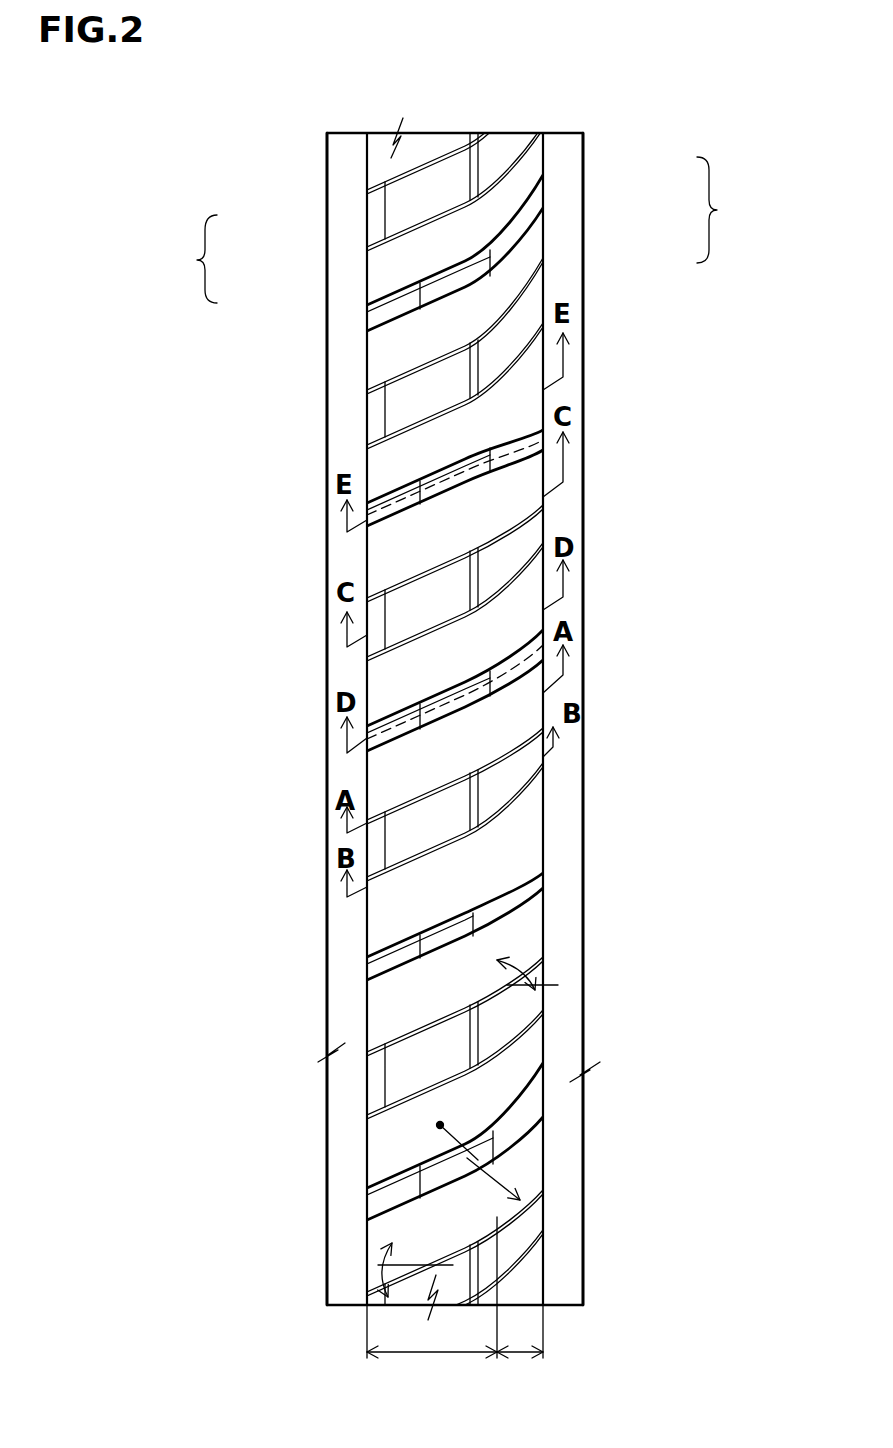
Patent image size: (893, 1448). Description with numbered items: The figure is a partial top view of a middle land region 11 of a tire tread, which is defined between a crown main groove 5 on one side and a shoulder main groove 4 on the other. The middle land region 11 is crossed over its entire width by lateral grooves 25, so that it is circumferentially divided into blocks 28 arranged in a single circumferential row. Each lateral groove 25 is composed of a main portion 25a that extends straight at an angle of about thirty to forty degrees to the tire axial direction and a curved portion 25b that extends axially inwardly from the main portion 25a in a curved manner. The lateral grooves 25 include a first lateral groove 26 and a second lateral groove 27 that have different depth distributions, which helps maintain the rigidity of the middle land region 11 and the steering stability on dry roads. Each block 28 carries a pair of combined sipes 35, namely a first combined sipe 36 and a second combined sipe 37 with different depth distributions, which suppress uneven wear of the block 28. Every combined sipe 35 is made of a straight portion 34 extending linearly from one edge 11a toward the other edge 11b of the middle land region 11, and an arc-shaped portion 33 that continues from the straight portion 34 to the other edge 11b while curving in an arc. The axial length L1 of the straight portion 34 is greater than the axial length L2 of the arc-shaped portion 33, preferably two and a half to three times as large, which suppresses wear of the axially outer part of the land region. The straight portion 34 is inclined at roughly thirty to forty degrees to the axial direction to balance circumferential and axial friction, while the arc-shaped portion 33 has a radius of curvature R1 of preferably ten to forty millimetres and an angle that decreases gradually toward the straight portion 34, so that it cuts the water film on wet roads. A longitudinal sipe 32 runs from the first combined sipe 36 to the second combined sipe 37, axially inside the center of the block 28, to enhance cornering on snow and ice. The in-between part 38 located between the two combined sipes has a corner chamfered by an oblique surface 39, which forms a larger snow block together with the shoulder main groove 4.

The shoulder main groove 4 is at (347, 175).
The crown main groove 5 is at (562, 185).
The middle land region 11 is at (432, 190).
The one edge of the middle land region 11a is at (367, 415).
The other edge of the middle land region 11b is at (545, 285).
The lateral groove 25 is at (457, 549).
The main portion 25a is at (462, 272).
The curved portion 25b is at (525, 235).
The first lateral groove 26 is at (457, 684).
The second lateral groove 27 is at (448, 478).
The block 28 is at (468, 308).
The longitudinal sipe 32 is at (482, 590).
The arc-shaped portion 33 is at (508, 360).
The straight portion 34 is at (434, 406).
The combined sipe 35 is at (459, 548).
The first combined sipe 36 is at (518, 750).
The second combined sipe 37 is at (474, 836).
The in-between part 38 is at (460, 577).
The chamfered surface 39 is at (438, 480).
The radius of curvature R1 is at (480, 1157).
The length of the straight portion L1 is at (432, 1303).
The length of the arc-shaped portion L2 is at (520, 1347).